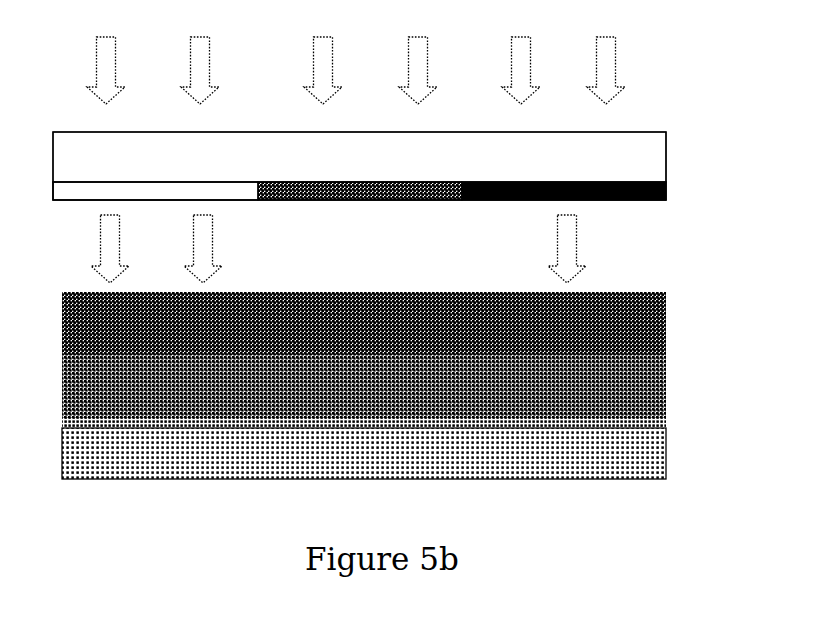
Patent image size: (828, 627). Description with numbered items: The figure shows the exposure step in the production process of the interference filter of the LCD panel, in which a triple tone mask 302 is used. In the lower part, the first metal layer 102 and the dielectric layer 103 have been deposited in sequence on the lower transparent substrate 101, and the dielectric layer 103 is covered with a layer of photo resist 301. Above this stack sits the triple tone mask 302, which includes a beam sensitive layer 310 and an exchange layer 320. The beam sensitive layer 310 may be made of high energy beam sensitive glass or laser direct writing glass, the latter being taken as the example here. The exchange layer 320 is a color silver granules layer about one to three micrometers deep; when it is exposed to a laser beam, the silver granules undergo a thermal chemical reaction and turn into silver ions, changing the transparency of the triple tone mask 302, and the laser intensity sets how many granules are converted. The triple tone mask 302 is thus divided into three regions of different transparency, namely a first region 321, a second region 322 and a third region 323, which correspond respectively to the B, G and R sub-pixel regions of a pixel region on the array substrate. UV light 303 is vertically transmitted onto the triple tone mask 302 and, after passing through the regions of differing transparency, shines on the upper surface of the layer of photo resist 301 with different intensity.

The UV light 303 is at (616, 71).
The triple tone mask 302 is at (735, 140).
The beam sensitive layer 310 is at (660, 150).
The exchange layer 320 is at (667, 190).
The first region 321 is at (95, 193).
The second region 322 is at (397, 200).
The third region 323 is at (608, 200).
The layer of photo resist 301 is at (663, 322).
The dielectric layer 103 is at (658, 388).
The first metal layer 102 is at (663, 425).
The lower transparent substrate 101 is at (658, 455).